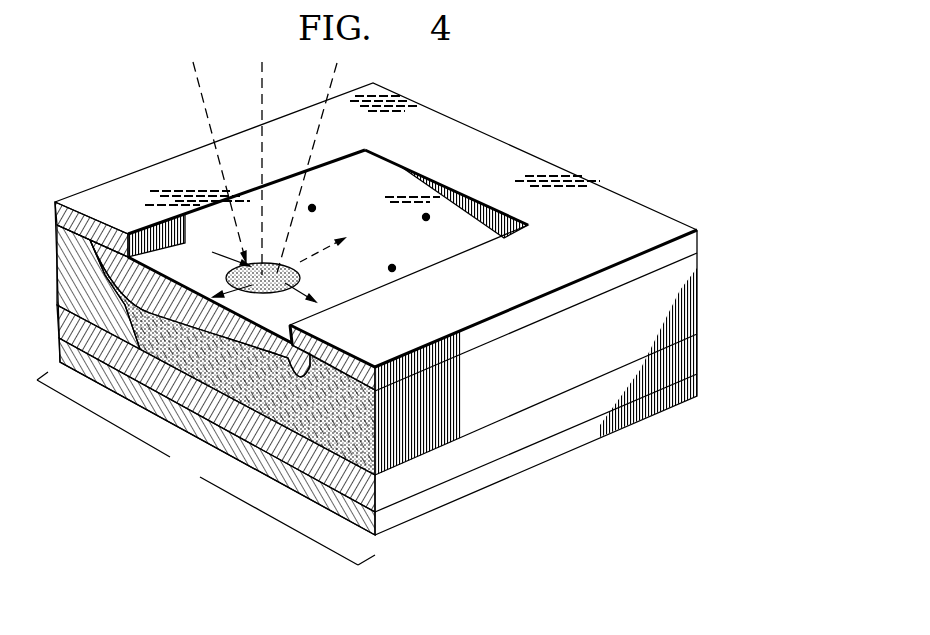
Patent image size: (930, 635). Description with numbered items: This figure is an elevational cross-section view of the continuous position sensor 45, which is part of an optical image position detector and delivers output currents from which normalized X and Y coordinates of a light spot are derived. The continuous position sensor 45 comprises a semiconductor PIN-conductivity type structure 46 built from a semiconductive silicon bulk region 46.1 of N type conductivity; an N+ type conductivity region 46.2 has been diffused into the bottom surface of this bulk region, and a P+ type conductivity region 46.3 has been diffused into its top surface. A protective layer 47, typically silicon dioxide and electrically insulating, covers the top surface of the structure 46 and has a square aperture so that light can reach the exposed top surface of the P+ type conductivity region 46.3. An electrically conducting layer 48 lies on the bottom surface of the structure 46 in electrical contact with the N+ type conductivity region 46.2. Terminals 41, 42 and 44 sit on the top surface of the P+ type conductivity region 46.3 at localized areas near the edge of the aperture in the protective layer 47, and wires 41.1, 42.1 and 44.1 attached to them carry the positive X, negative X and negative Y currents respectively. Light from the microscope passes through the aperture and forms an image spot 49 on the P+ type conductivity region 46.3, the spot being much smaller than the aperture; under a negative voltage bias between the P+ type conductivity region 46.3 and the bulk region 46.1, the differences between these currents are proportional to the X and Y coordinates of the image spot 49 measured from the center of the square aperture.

The terminal 41 is at (605, 313).
The wire 41.1 is at (523, 277).
The terminal 42 is at (107, 85).
The wire 42.1 is at (155, 100).
The terminal 44 is at (562, 123).
The wire 44.1 is at (532, 133).
The continuous position sensor 45 is at (206, 468).
The semiconductor PIN-conductivity type structure 46 is at (35, 221).
The semiconductive silicon bulk region 46.1 is at (675, 280).
The N+ type conductivity region 46.2 is at (685, 357).
The P+ type conductivity region 46.3 is at (305, 353).
The protective layer 47 is at (97, 197).
The electrically conducting layer 48 is at (480, 480).
The image spot 49 is at (258, 290).